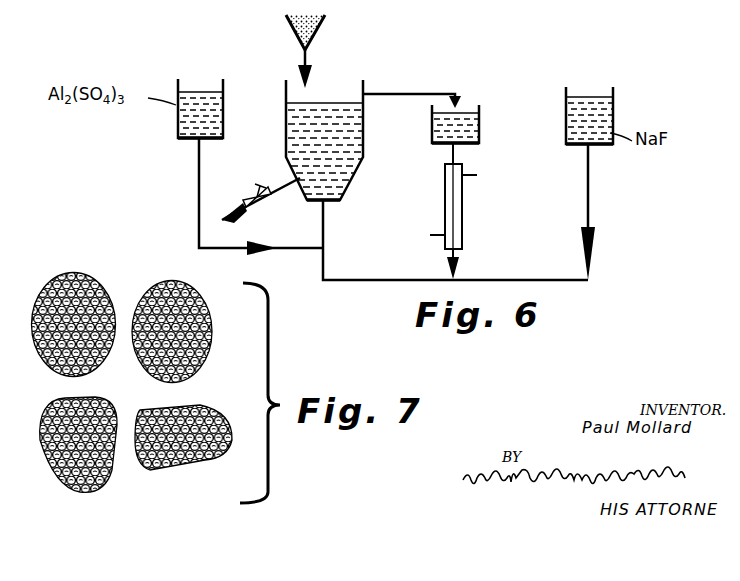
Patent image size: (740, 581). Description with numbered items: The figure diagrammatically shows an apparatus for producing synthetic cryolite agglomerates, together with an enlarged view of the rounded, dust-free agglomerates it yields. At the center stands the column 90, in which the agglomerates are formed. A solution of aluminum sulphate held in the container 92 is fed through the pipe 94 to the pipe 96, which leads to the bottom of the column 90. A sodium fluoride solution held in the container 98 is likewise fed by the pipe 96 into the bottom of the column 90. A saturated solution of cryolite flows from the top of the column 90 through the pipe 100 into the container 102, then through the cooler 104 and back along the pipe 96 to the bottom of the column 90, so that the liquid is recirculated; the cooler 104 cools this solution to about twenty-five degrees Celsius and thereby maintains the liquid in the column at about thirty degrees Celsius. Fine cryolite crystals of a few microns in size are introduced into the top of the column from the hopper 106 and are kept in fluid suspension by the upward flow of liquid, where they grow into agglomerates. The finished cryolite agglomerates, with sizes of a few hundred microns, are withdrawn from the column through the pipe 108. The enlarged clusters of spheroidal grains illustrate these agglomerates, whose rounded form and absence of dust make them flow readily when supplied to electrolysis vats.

The column 90 is at (363, 128).
The container 92 is at (223, 116).
The pipe 94 is at (198, 209).
The pipe 96 is at (327, 268).
The container 98 is at (613, 117).
The pipe 100 is at (388, 94).
The container 102 is at (480, 129).
The cooler 104 is at (464, 207).
The hopper 106 is at (325, 30).
The pipe 108 is at (242, 206).